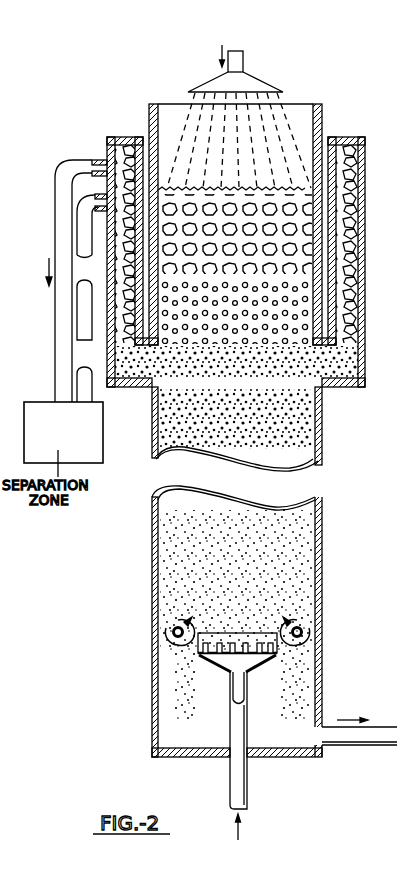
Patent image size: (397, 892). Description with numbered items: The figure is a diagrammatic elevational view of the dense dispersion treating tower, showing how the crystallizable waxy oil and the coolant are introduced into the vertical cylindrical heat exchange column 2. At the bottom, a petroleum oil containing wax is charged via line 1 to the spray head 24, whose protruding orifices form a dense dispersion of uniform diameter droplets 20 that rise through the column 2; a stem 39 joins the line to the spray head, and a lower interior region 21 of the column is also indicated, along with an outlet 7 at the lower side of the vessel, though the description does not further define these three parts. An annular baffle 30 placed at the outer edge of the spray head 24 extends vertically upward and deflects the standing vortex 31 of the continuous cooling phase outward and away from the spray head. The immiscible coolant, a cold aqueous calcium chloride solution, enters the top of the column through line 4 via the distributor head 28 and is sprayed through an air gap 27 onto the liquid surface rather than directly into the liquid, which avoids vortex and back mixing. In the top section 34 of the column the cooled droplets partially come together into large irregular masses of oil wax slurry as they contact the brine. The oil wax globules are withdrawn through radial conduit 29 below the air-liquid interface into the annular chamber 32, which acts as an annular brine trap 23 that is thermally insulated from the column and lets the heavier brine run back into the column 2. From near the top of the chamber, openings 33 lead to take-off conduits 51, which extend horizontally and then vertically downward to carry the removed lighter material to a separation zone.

The line 1 is at (246, 793).
The column 2 is at (153, 530).
The line 4 is at (243, 62).
The outlet pipe 7 is at (360, 735).
The droplets 20 is at (115, 358).
The transfer duct 21 is at (162, 428).
The annular brine trap 23 is at (66, 140).
The spray head 24 is at (268, 658).
The air gap 27 is at (285, 118).
The distributor head 28 is at (258, 84).
The radial conduit 29 is at (150, 362).
The annular baffle 30 is at (201, 656).
The standing vortex 31 is at (176, 630).
The annular chamber 32 is at (118, 265).
The openings 33 is at (100, 193).
The top section 34 is at (305, 265).
The distributor stem 39 is at (252, 656).
The take-off conduits 51 is at (82, 242).